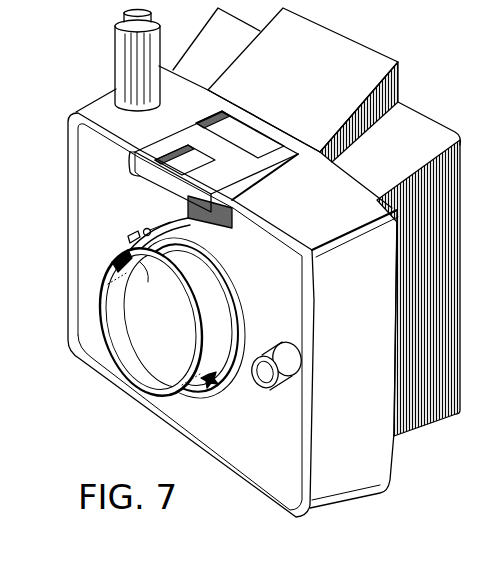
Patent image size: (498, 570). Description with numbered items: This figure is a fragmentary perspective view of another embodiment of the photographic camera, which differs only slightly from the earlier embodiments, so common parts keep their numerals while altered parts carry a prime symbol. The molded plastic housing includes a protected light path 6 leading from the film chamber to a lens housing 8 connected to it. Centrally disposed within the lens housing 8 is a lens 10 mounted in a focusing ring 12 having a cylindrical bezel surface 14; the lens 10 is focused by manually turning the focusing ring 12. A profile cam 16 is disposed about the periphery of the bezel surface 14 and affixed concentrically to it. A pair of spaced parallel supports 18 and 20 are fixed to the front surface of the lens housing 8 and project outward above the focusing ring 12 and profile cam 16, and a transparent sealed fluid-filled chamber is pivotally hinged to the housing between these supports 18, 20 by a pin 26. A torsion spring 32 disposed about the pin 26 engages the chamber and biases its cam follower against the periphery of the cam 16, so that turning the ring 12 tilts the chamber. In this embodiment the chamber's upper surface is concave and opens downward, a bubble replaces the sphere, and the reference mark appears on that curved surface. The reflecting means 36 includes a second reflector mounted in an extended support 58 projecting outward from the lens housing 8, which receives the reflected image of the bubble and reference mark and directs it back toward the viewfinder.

The protected light path 6 is at (439, 278).
The lens housing 8 is at (364, 343).
The lens 10 is at (167, 333).
The focusing ring 12 is at (165, 390).
The bezel surface 14 is at (212, 384).
The profile cam 16 is at (228, 278).
The support 18 is at (217, 240).
The support 20 is at (172, 214).
The pin 26 is at (198, 258).
The torsion spring 32 is at (150, 278).
The reflecting means 36 is at (118, 182).
The extended support 58 is at (143, 160).